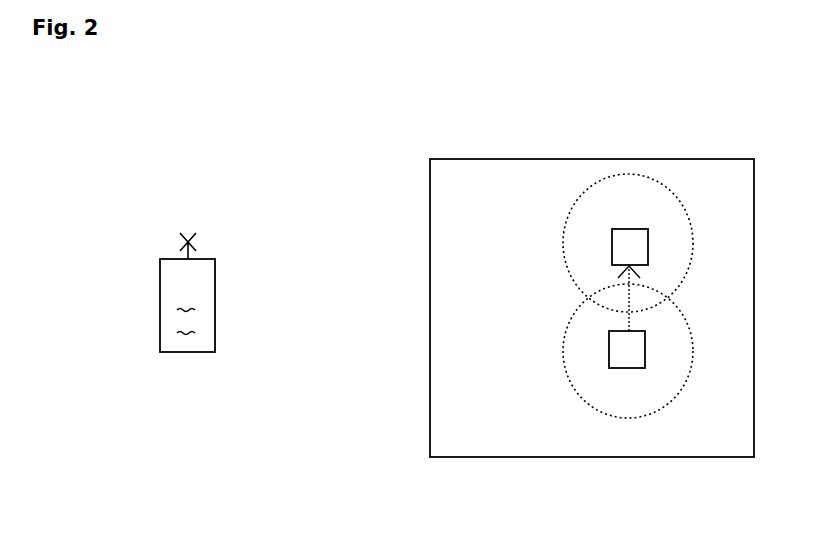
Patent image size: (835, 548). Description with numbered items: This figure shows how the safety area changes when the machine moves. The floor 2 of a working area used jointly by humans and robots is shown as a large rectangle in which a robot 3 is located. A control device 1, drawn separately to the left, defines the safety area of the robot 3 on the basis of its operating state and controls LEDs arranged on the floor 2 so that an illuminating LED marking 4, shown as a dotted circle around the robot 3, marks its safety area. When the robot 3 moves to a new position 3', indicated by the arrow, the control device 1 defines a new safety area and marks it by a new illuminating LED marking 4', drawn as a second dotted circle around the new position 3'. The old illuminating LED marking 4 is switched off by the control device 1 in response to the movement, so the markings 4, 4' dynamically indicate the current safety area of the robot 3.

The control device 1 is at (215, 259).
The floor 2 is at (735, 159).
The robot 3 is at (703, 350).
The new position of the robot 3' is at (707, 243).
The illuminating LED marking 4 is at (628, 409).
The new illuminating LED marking 4' is at (628, 189).